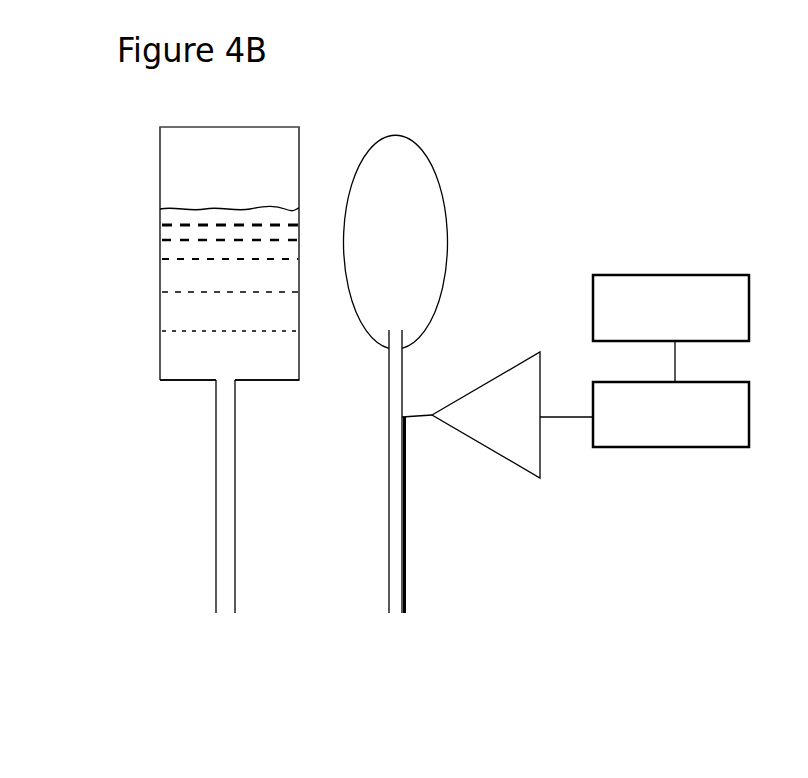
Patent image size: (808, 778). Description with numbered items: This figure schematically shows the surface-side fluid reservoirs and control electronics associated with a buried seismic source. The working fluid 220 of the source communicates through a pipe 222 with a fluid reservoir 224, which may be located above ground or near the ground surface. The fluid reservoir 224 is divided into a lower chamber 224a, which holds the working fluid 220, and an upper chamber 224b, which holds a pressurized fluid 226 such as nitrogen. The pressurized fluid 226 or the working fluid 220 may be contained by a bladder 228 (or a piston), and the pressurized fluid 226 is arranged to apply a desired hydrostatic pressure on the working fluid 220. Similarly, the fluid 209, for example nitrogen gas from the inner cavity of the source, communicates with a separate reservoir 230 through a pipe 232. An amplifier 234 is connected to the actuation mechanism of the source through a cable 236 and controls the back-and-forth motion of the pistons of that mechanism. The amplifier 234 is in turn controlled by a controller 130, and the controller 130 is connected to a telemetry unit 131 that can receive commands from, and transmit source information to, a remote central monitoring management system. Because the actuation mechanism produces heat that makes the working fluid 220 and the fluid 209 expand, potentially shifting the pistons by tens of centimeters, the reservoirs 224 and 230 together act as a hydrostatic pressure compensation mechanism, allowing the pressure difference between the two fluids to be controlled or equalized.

The fluid reservoir 224 is at (160, 154).
The upper chamber 224b is at (178, 180).
The lower chamber 224a is at (178, 338).
The pressurized fluid 226 is at (247, 192).
The bladder 228 is at (272, 217).
The working fluid 220 is at (253, 363).
The pipe 222 is at (216, 504).
The fluid 209 is at (418, 255).
The reservoir 230 is at (447, 198).
The pipe 232 is at (392, 540).
The amplifier 234 is at (508, 462).
The cable 236 is at (406, 587).
The telemetry unit 131 is at (655, 275).
The controller 130 is at (661, 447).